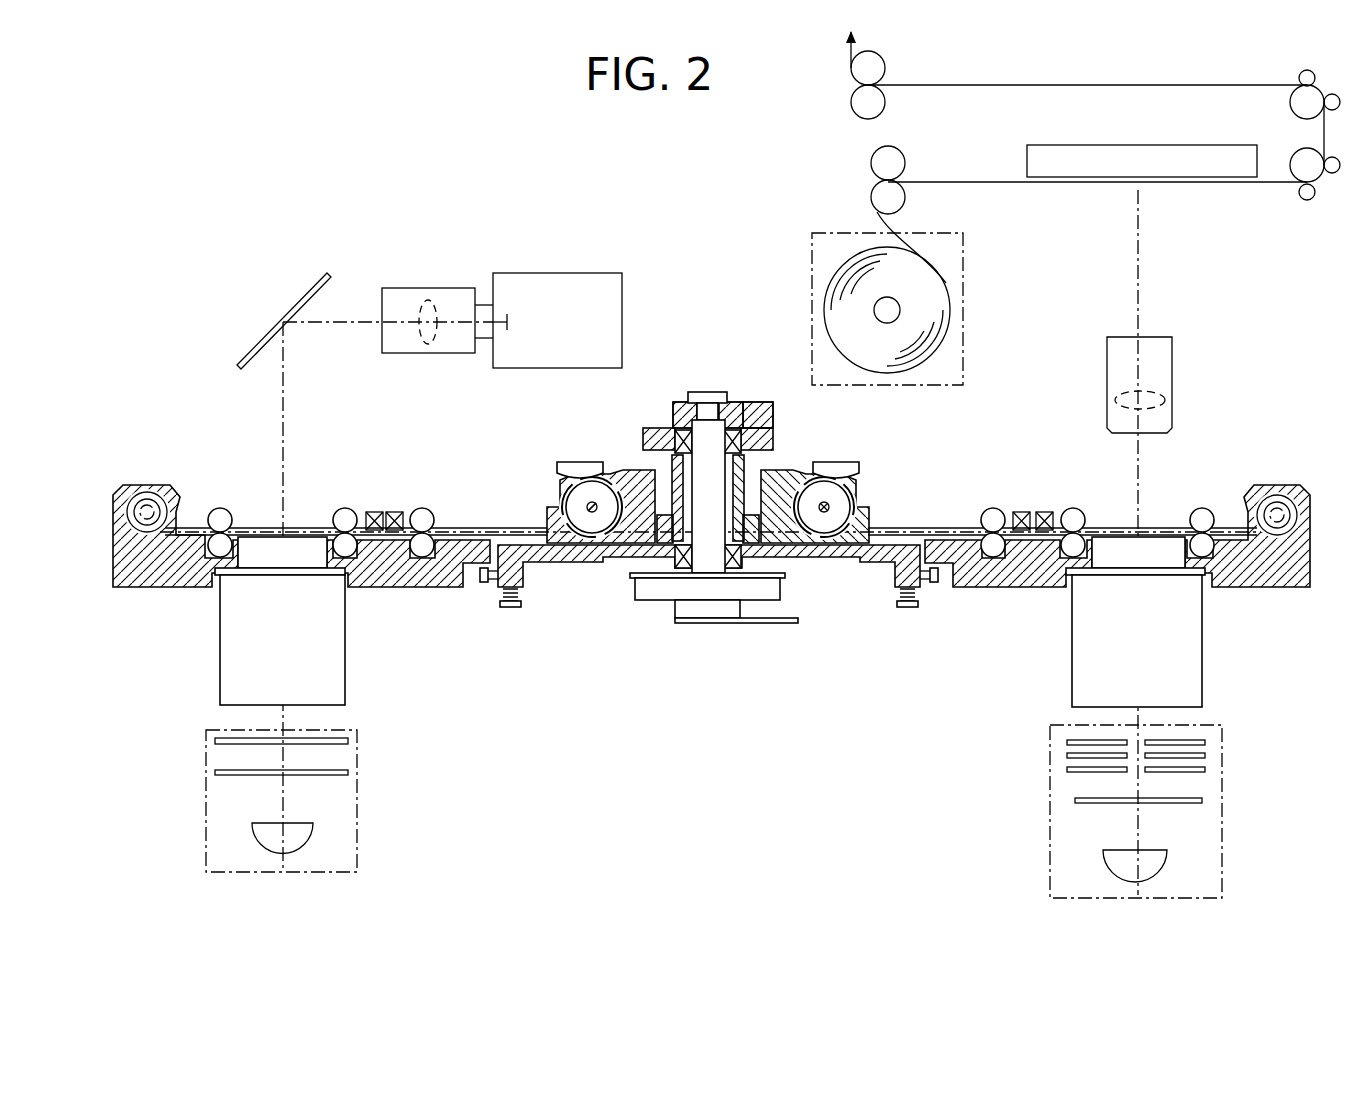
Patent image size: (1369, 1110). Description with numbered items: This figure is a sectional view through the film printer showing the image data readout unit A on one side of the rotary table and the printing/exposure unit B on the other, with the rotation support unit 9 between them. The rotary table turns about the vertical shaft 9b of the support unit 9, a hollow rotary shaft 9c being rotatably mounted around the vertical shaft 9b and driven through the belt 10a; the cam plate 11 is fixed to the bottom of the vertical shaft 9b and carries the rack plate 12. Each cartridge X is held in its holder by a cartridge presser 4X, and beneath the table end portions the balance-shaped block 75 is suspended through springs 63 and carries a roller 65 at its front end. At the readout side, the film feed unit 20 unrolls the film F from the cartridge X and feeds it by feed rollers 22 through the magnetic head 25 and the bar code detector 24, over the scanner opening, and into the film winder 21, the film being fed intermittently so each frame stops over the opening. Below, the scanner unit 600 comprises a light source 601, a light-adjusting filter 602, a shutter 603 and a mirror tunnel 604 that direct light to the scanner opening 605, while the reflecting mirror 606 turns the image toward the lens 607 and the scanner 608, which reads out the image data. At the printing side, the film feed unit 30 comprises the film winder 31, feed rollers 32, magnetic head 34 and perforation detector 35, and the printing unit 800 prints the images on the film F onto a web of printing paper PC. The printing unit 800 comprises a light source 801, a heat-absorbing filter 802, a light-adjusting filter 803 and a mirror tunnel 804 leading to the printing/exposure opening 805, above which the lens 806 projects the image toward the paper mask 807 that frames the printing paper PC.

The scanner unit 600 is at (375, 283).
The reflecting mirror 606 is at (255, 345).
The lens 607 is at (425, 290).
The scanner 608 is at (558, 292).
The image data readout unit A is at (205, 372).
The printing/exposure unit B is at (1240, 410).
The film feed unit 20 is at (205, 468).
The film winder 21 is at (150, 488).
The feed rollers 22 is at (222, 507).
The bar code detector 24 is at (374, 510).
The magnetic head 25 is at (396, 510).
The film F is at (485, 528).
The cartridge X is at (558, 495).
The cartridge presser 4X is at (575, 462).
The rotation support unit 9 is at (725, 440).
The vertical shaft 9b is at (705, 410).
The rotary shaft 9c is at (745, 423).
The belt 10a is at (770, 445).
The cam plate 11 is at (650, 592).
The rack plate 12 is at (760, 624).
The springs 63 is at (515, 588).
The roller 65 is at (483, 582).
The block 75 is at (510, 607).
The film feed unit 30 is at (985, 490).
The film winder 31 is at (1290, 490).
The feed rollers 32 is at (1075, 510).
The magnetic head 34 is at (1045, 512).
The perforation detector 35 is at (1022, 512).
The printing unit 800 is at (1260, 330).
The lens 806 is at (1170, 350).
The paper mask 807 is at (1192, 168).
The printing paper PC is at (1042, 188).
The light source 601 is at (300, 825).
The light-adjusting filter 602 is at (350, 773).
The shutter 603 is at (350, 740).
The mirror tunnel 604 is at (243, 655).
The scanner opening 605 is at (265, 565).
The light source 801 is at (1150, 862).
The heat-absorbing filter 802 is at (1205, 800).
The light-adjusting filter 803 is at (1205, 752).
The mirror tunnel 804 is at (1190, 655).
The printing/exposure opening 805 is at (1170, 565).